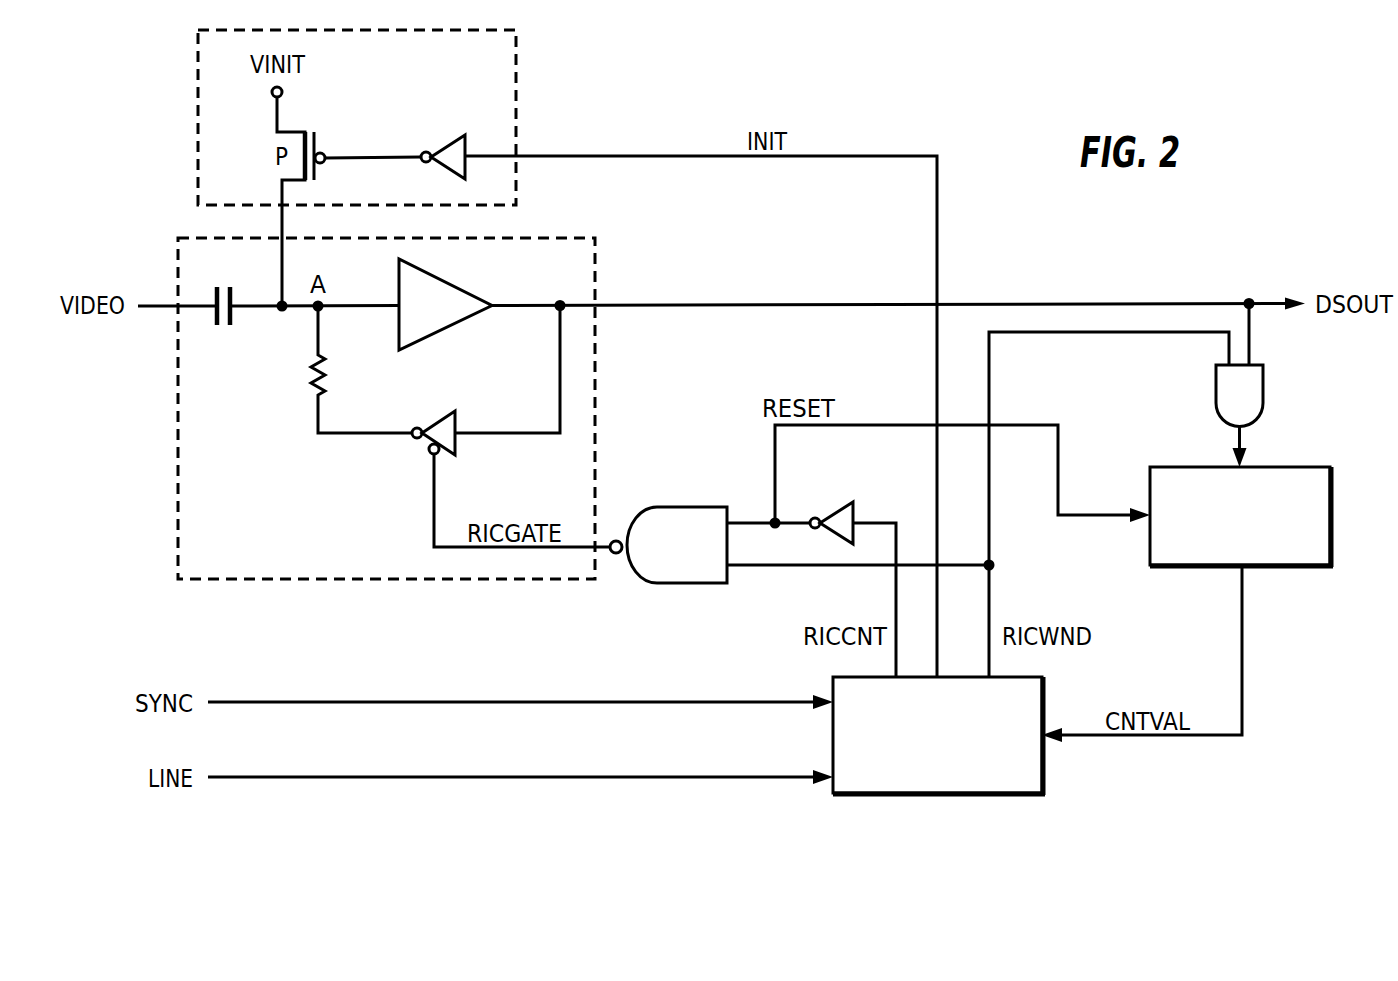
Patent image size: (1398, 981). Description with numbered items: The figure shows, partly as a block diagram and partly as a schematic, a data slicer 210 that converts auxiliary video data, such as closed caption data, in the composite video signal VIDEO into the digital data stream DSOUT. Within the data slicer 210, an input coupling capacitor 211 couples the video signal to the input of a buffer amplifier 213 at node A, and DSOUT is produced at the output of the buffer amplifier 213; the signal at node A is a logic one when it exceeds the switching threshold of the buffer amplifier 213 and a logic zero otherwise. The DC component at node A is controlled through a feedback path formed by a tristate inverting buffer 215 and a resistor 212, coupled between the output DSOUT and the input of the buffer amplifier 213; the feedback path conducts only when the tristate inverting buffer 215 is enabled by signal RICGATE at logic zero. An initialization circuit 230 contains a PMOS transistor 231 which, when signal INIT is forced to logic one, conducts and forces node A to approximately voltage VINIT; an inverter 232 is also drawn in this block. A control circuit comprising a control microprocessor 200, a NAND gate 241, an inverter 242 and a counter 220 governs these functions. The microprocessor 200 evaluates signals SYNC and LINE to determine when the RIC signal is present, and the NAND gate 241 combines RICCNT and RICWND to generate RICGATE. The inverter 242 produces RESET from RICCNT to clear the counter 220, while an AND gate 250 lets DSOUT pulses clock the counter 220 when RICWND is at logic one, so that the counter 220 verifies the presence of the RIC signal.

The control microprocessor 200 is at (953, 795).
The data slicer 210 is at (253, 544).
The input coupling capacitor 211 is at (235, 321).
The resistor 212 is at (312, 366).
The buffer amplifier 213 is at (444, 277).
The tristate inverting buffer 215 is at (447, 417).
The counter 220 is at (1272, 467).
The initialization circuit 230 is at (475, 74).
The PMOS transistor 231 is at (295, 131).
The inverter 232 is at (447, 139).
The NAND gate 241 is at (661, 507).
The inverter 242 is at (853, 505).
The AND gate 250 is at (1216, 367).